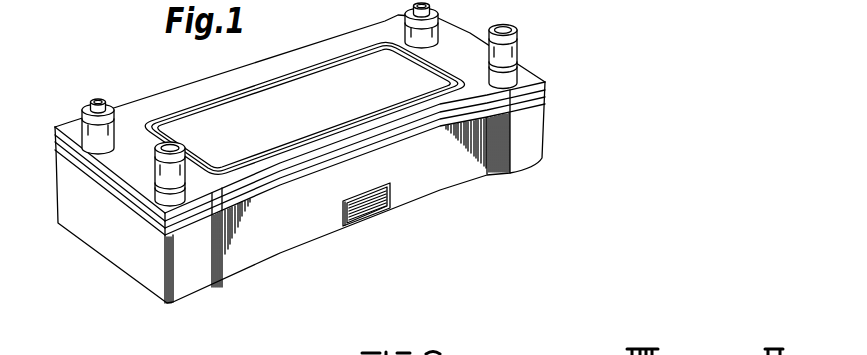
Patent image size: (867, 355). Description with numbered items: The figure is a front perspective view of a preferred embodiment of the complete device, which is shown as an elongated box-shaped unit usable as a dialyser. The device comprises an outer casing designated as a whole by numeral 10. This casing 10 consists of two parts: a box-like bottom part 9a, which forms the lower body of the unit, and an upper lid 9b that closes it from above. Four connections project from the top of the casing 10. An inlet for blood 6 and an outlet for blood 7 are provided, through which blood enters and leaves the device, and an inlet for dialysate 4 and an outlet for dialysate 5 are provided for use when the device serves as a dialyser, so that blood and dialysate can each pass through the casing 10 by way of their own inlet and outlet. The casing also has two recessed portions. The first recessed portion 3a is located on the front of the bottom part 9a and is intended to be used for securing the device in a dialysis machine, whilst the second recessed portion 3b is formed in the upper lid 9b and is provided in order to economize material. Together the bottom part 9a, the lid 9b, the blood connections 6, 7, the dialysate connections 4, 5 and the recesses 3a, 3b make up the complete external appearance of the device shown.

The recessed portion 3a is at (387, 202).
The recessed portion 3b is at (329, 117).
The dialysate inlet 4 is at (166, 175).
The dialysate outlet 5 is at (512, 56).
The blood inlet 6 is at (437, 16).
The blood outlet 7 is at (90, 130).
The box-like bottom part 9a is at (125, 242).
The upper lid 9b is at (197, 95).
The outer casing 10 is at (265, 60).